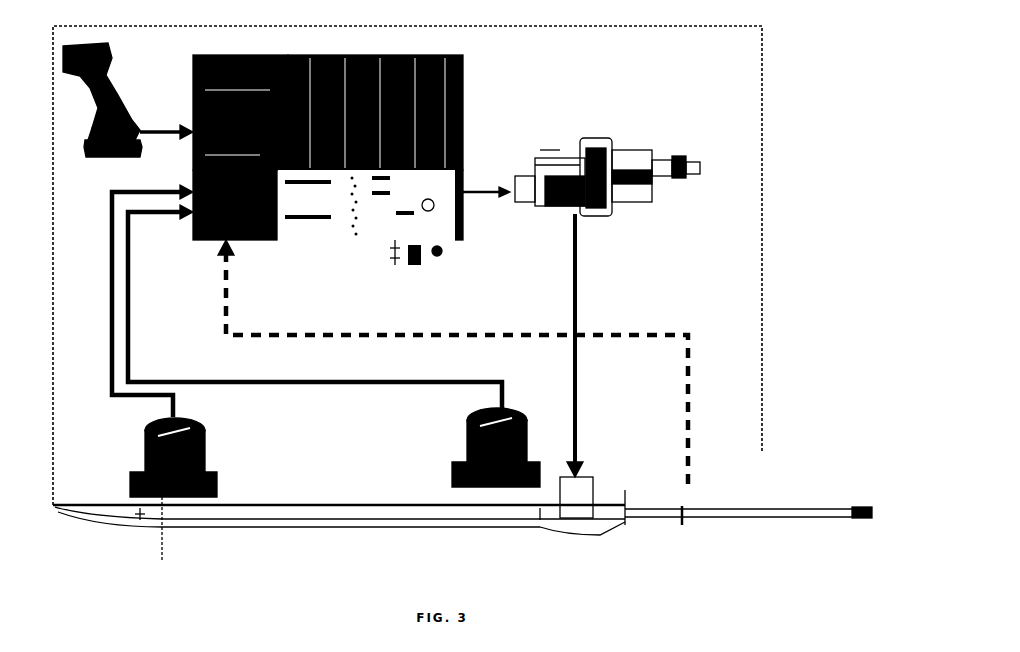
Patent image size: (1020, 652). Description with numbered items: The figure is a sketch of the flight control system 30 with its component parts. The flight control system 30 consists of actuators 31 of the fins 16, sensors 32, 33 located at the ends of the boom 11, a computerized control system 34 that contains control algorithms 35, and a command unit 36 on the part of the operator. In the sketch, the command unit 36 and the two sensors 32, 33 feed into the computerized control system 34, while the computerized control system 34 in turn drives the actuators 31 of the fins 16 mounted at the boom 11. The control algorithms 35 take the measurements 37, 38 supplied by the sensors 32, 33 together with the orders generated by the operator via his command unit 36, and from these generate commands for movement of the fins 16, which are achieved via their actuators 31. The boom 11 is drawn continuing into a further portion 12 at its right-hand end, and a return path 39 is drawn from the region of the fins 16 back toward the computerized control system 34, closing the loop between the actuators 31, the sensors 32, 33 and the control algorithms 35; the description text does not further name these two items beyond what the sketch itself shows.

The boom 11 is at (382, 536).
The rail extension 12 is at (746, 521).
The fins 16 is at (594, 473).
The flight control system 30 is at (768, 157).
The actuators 31 is at (658, 198).
The sensor 32 is at (214, 450).
The sensor 33 is at (448, 450).
The computerized control system 34 is at (469, 76).
The control algorithms 35 is at (364, 262).
The command unit 36 is at (96, 166).
The measurement 37 is at (106, 364).
The measurement 38 is at (138, 355).
The feedback line 39 is at (236, 303).